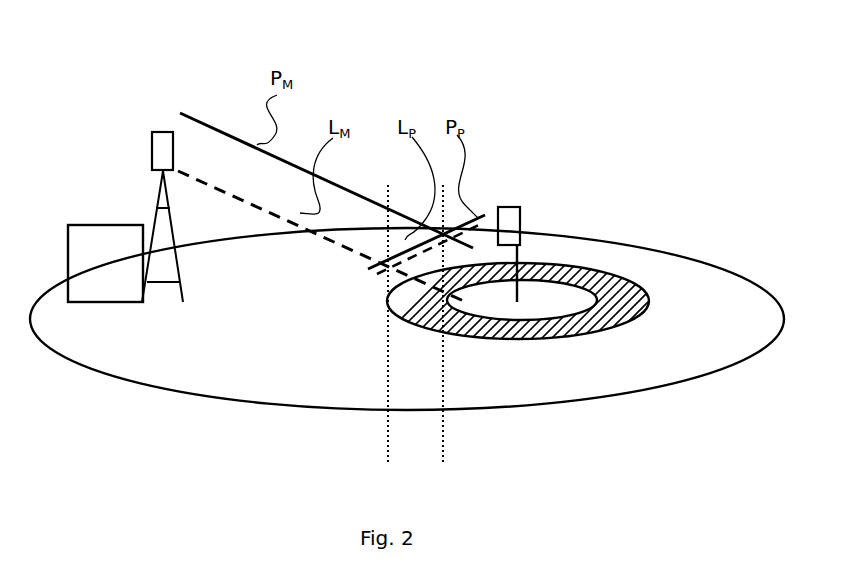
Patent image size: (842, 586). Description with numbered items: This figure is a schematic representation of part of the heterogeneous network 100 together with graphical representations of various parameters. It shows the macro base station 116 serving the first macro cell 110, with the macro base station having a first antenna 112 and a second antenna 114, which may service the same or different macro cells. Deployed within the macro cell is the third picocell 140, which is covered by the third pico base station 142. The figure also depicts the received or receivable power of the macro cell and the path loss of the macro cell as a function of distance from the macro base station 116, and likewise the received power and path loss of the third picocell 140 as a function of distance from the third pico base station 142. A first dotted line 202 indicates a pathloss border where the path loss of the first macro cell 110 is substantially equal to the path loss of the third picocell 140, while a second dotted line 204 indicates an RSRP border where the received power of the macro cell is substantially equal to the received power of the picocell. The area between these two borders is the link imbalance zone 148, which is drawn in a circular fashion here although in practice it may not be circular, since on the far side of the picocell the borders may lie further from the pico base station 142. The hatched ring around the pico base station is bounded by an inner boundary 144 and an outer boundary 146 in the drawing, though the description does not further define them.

The heterogeneous network 100 is at (753, 120).
The first macro cell 110 is at (724, 355).
The first antenna 112 is at (181, 113).
The second antenna 114 is at (153, 207).
The macro base station 116 is at (108, 225).
The third picocell 140 is at (536, 288).
The third pico base station 142 is at (511, 207).
The inner boundary 144 is at (543, 322).
The outer boundary 146 is at (640, 323).
The link imbalance zone 148 is at (642, 275).
The first dotted line 202 is at (388, 455).
The second dotted line 204 is at (443, 462).